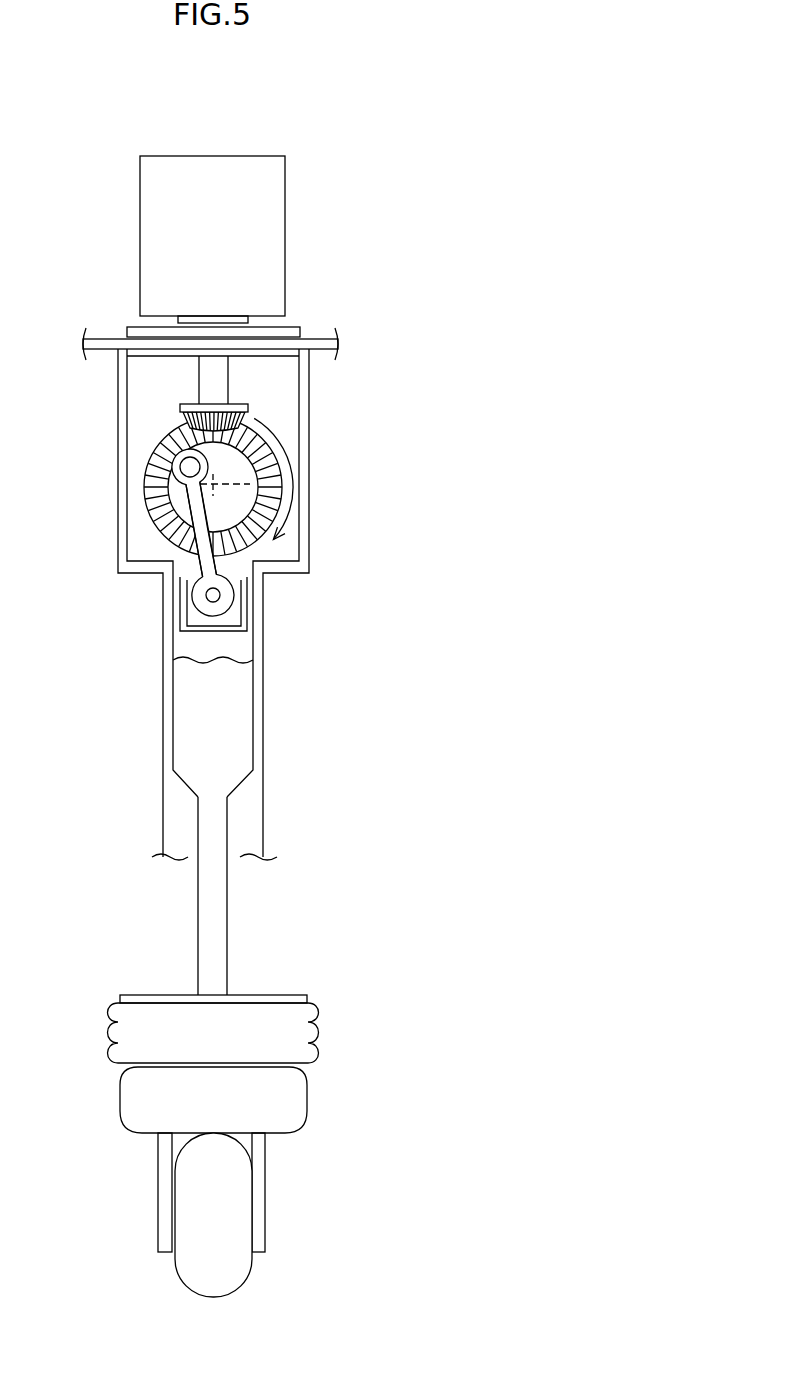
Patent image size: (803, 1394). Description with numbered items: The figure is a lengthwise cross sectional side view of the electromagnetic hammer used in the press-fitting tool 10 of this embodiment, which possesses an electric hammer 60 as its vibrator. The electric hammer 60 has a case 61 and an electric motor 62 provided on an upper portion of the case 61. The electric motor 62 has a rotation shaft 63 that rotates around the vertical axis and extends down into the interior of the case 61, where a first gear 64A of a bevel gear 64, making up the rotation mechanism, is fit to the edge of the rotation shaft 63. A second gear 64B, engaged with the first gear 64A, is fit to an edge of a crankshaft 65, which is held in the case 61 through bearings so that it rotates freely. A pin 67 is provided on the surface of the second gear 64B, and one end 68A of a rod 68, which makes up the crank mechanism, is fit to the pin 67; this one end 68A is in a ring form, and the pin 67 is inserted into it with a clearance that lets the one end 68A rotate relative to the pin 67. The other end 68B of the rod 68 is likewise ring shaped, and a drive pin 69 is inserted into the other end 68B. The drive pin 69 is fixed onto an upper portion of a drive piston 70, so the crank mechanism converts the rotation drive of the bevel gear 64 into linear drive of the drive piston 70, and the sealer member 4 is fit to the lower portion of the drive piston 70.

The press-fitting tool 10 is at (315, 157).
The electric hammer 60 is at (328, 270).
The electric motor 62 is at (166, 248).
The case 61 is at (170, 647).
The rotation shaft 63 is at (210, 380).
The bevel gear 64 is at (370, 385).
The first gear 64A is at (243, 426).
The second gear 64B is at (272, 472).
The crankshaft 65 is at (303, 505).
The pin 67 is at (188, 467).
The rod 68 is at (192, 513).
The one end of rod 68A is at (183, 487).
The other end of rod 68B is at (200, 583).
The drive pin 69 is at (208, 597).
The drive piston 70 is at (208, 719).
The sealer member 4 is at (315, 983).